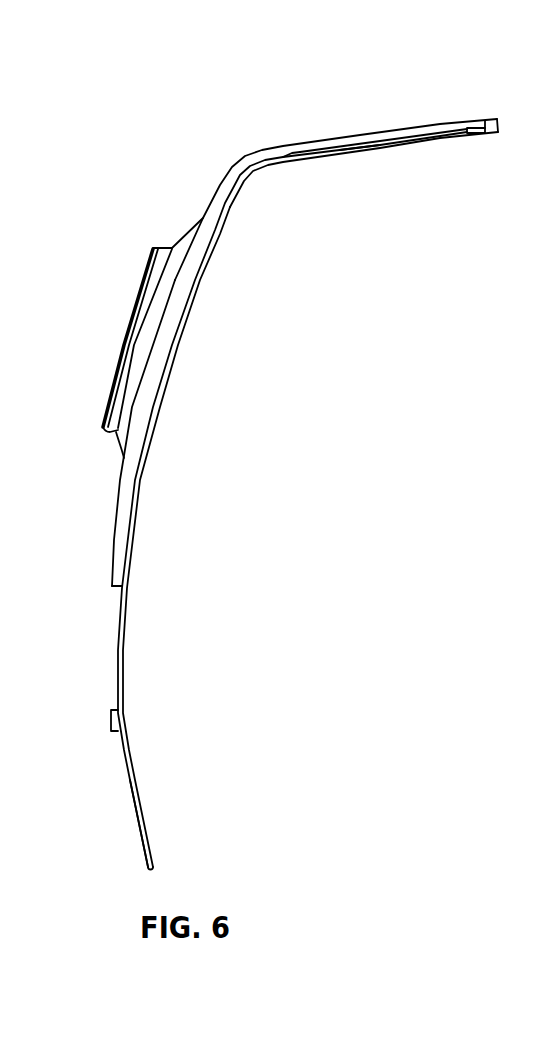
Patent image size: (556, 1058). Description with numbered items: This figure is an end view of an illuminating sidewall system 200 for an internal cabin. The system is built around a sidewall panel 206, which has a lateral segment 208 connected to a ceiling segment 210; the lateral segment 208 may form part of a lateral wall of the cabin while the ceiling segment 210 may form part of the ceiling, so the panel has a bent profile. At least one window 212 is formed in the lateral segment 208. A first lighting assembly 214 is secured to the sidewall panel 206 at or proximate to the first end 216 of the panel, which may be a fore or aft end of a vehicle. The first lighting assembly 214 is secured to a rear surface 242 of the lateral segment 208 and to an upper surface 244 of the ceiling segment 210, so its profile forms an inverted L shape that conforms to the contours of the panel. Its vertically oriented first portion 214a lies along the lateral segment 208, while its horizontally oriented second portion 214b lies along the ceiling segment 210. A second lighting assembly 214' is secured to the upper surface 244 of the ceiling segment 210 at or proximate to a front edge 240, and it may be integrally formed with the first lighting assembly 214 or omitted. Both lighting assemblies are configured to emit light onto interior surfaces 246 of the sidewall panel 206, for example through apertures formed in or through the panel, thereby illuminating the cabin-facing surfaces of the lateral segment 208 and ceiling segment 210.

The illuminating sidewall system 200 is at (120, 140).
The sidewall panel 206 is at (147, 774).
The lateral segment 208 is at (124, 665).
The ceiling segment 210 is at (407, 148).
The window 212 is at (120, 345).
The first lighting assembly 214 is at (336, 161).
The second lighting assembly 214' is at (517, 85).
The first portion 214a is at (114, 522).
The second portion 214b is at (317, 140).
The first end 216 is at (113, 706).
The front edge 240 is at (515, 124).
The rear surface 242 is at (118, 612).
The upper surface 244 is at (282, 143).
The interior surfaces 246 is at (338, 154).